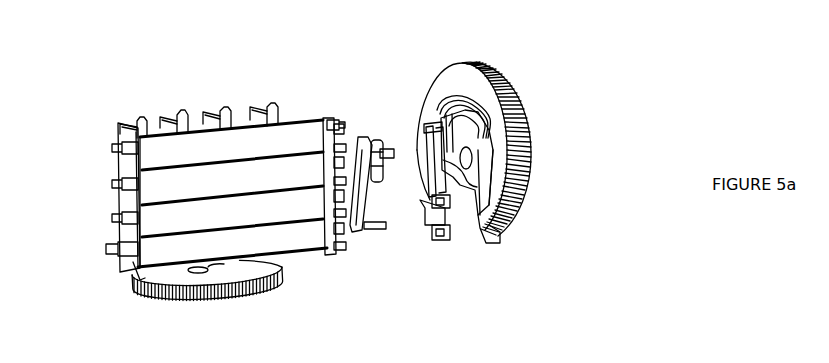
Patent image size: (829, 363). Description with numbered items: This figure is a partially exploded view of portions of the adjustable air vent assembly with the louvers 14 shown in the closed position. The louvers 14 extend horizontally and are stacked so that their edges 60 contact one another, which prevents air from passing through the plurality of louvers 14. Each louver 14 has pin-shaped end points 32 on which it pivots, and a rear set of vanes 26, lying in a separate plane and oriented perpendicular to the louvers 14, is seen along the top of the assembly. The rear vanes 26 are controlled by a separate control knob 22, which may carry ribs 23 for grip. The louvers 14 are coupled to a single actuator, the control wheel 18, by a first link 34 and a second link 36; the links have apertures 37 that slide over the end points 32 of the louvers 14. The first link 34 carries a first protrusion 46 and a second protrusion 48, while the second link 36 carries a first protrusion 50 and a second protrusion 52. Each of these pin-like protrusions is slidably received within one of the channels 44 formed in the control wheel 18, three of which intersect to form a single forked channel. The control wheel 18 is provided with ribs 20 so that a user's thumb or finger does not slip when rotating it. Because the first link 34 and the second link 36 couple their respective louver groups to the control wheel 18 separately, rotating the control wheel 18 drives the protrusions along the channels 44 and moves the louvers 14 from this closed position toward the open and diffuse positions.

The louvers 14 is at (306, 123).
The control wheel 18 is at (460, 87).
The ribs 20 is at (513, 110).
The control knob 22 is at (227, 272).
The ribs 23 is at (188, 300).
The rear vanes 26 is at (123, 122).
The end points 32 is at (341, 124).
The first link 34 is at (375, 192).
The second link 36 is at (432, 200).
The apertures 37 is at (370, 142).
The channels 44 is at (489, 107).
The first protrusion 46 is at (385, 148).
The second protrusion 48 is at (387, 224).
The first protrusion 50 is at (432, 127).
The second protrusion 52 is at (450, 222).
The edges 60 is at (147, 229).